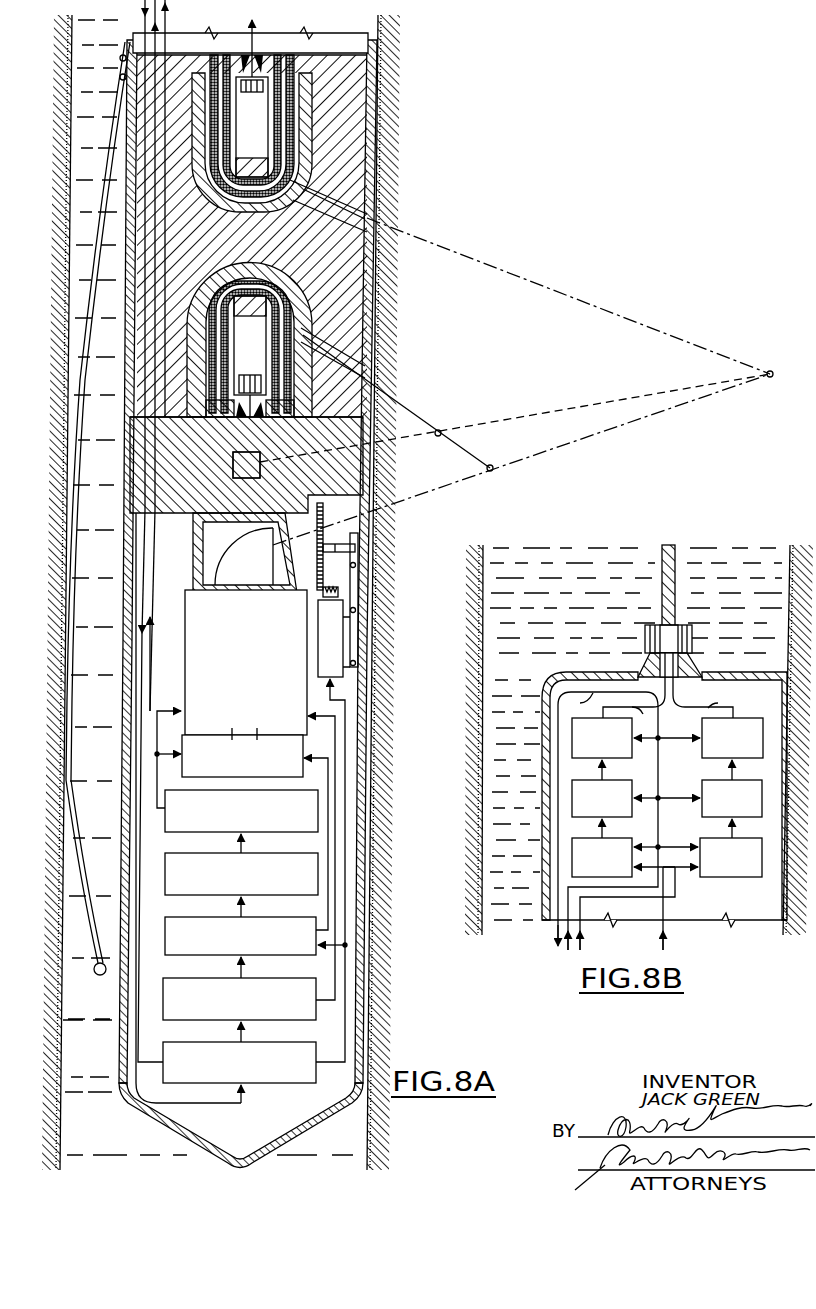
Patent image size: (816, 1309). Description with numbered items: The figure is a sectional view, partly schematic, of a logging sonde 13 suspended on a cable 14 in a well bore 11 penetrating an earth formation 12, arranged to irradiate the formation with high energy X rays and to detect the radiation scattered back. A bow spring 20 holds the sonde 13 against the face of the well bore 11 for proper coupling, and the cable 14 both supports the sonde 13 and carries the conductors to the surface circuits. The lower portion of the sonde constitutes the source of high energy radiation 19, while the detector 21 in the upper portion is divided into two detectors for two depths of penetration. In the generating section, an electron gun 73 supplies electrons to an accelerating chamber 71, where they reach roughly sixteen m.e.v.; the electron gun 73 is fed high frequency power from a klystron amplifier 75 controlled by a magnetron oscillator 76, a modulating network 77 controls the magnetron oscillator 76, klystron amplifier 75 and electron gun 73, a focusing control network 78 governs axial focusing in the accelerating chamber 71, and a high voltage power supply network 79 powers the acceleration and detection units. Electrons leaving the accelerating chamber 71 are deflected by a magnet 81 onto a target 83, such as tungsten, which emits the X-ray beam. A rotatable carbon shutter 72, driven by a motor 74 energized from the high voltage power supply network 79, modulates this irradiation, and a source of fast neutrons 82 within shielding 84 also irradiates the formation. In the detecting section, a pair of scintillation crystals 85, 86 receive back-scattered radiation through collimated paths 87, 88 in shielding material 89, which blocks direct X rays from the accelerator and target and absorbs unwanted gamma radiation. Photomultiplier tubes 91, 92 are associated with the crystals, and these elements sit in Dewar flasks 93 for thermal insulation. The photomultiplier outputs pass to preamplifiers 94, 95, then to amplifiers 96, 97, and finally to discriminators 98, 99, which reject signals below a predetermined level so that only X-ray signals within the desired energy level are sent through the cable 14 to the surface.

In FIG. 8A, the well bore 11 is at (62, 1147).
In FIG. 8B, the well bore 11 is at (485, 610).
In FIG. 8A, the earth formation 12 is at (412, 313).
In FIG. 8B, the earth formation 12 is at (462, 770).
In FIG. 8A, the logging sonde 13 is at (125, 565).
In FIG. 8B, the logging sonde 13 is at (542, 830).
In FIG. 8B, the cable 14 is at (662, 590).
In FIG. 8A, the source of high energy radiation 19 is at (122, 628).
In FIG. 8A, the bow spring 20 is at (76, 790).
In FIG. 8A, the detector 21 is at (124, 245).
In FIG. 8A, the accelerating chamber 71 is at (216, 673).
In FIG. 8A, the rotatable carbon shutter 72 is at (325, 572).
In FIG. 8A, the electron gun 73 is at (298, 748).
In FIG. 8A, the motor 74 is at (344, 642).
In FIG. 8A, the klystron amplifier 75 is at (197, 832).
In FIG. 8A, the magnetron oscillator 76 is at (197, 895).
In FIG. 8A, the modulating network 77 is at (197, 955).
In FIG. 8A, the focusing control network 78 is at (197, 1020).
In FIG. 8A, the high voltage power supply network 79 is at (277, 1083).
In FIG. 8A, the magnet 81 is at (248, 541).
In FIG. 8A, the source of fast neutrons 82 is at (232, 465).
In FIG. 8A, the target 83 is at (277, 560).
In FIG. 8A, the shielding 84 is at (195, 496).
In FIG. 8A, the scintillation crystal 85 is at (243, 182).
In FIG. 8A, the scintillation crystal 86 is at (222, 272).
In FIG. 8A, the collimated path 87 is at (335, 188).
In FIG. 8A, the collimated path 88 is at (333, 348).
In FIG. 8A, the shielding material 89 is at (262, 243).
In FIG. 8A, the photomultiplier tube 91 is at (266, 116).
In FIG. 8A, the photomultiplier tube 92 is at (268, 358).
In FIG. 8A, the Dewar flask 93 is at (288, 133).
In FIG. 8B, the preamplifier 94 is at (730, 878).
In FIG. 8B, the preamplifier 95 is at (597, 836).
In FIG. 8B, the amplifier 96 is at (719, 818).
In FIG. 8B, the amplifier 97 is at (613, 817).
In FIG. 8B, the discriminator 98 is at (722, 761).
In FIG. 8B, the discriminator 99 is at (608, 761).